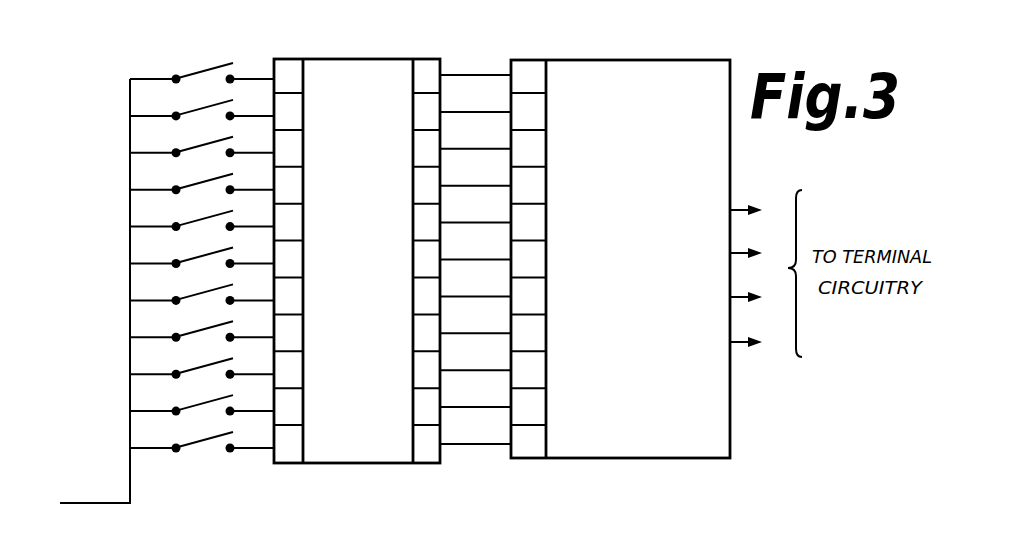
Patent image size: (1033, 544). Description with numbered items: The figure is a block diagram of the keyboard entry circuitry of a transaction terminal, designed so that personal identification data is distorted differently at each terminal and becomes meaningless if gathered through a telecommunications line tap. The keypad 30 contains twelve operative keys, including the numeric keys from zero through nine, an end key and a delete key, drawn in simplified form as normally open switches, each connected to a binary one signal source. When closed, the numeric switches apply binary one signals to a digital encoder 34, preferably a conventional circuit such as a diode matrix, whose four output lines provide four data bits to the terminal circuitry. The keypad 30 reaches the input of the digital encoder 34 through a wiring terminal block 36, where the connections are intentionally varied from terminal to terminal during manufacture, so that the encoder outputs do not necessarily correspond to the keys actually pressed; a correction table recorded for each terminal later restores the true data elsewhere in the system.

The keypad 30 is at (197, 54).
The digital encoder 34 is at (651, 117).
The wiring terminal block 36 is at (368, 122).